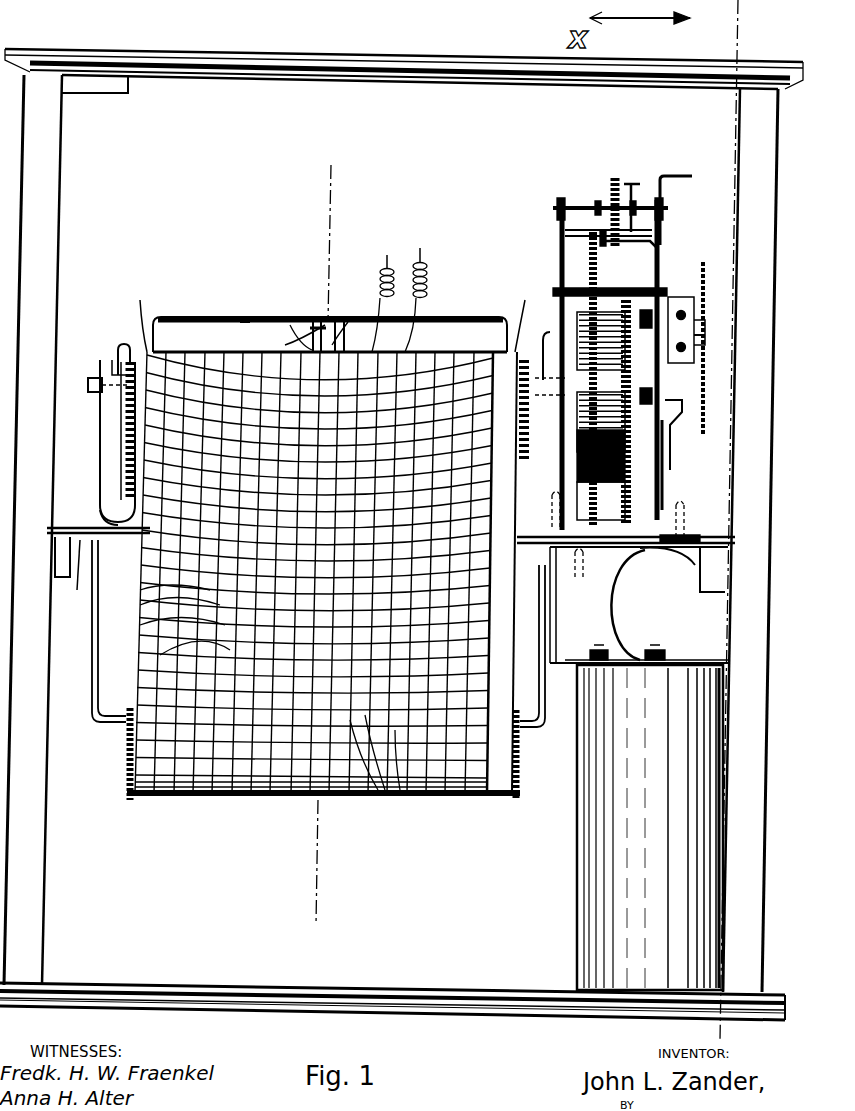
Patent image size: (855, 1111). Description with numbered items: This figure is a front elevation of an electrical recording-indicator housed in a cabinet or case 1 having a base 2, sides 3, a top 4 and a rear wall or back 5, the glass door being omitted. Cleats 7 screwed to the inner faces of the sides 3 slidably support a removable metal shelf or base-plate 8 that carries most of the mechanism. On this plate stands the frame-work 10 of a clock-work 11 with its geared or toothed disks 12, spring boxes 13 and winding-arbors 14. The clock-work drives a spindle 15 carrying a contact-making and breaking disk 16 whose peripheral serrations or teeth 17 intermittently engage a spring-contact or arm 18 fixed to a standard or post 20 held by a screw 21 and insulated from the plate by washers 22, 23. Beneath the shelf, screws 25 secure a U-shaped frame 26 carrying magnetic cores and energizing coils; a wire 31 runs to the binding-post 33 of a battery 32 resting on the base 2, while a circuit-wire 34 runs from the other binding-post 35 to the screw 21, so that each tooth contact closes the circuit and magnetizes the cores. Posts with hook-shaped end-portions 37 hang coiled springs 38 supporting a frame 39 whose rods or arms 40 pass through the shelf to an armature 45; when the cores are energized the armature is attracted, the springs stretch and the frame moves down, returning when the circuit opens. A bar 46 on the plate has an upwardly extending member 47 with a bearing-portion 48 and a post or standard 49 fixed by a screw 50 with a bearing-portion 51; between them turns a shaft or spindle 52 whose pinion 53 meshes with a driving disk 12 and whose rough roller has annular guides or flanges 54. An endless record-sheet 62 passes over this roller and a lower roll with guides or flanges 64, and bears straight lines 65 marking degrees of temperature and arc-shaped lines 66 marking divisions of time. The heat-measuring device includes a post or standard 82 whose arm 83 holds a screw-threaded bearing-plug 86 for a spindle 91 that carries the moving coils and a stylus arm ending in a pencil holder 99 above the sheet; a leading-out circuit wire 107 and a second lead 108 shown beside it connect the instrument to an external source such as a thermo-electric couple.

The cabinet or case 1 is at (392, 1023).
The base 2 is at (219, 985).
The sides 3 is at (48, 258).
The top 4 is at (422, 60).
The rear wall or back 5 is at (252, 95).
The cleats 7 is at (53, 570).
The shelf or base-plate 8 is at (122, 528).
The frame-work 10 is at (655, 262).
The clock-work 11 is at (603, 342).
The geared or toothed disks 12 is at (660, 275).
The boxes 13 is at (605, 300).
The winding-arbors 14 is at (684, 418).
The spindle 15 is at (708, 342).
The contact-making and breaking disk 16 is at (700, 290).
The serrations or teeth 17 is at (715, 334).
The spring-contact or arm 18 is at (705, 325).
The standard or post 20 is at (680, 470).
The screw 21 is at (704, 507).
The insulating washer 22 is at (686, 536).
The insulating washer 23 is at (674, 573).
The screws 25 is at (325, 581).
The U-shaped frame 26 is at (104, 724).
The wire 31 is at (566, 660).
The battery 32 is at (590, 878).
The binding-post 33 is at (602, 648).
The circuit-wire 34 is at (628, 607).
The binding-post 35 is at (104, 520).
The hook-shaped end-portion 37 is at (118, 352).
The coiled spring 38 is at (126, 452).
The ⌐⌐-shaped frame 39 is at (243, 320).
The rods or arms 40 is at (158, 333).
The armature 45 is at (588, 548).
The bar 46 is at (622, 512).
The upwardly extending member 47 is at (102, 412).
The bearing-portion 48 is at (116, 358).
The post or standard 49 is at (556, 500).
The screw 50 is at (520, 512).
The bearing-portion 51 is at (601, 342).
The shaft or spindle 52 is at (602, 405).
The pinion 53 is at (652, 395).
The annular guides or flanges 54 is at (332, 316).
The record-sheet 62 is at (226, 797).
The guides or flanges 64 is at (128, 800).
The straight lines 65 is at (138, 612).
The arc-shaped lines 66 is at (398, 800).
The post or standard 82 is at (350, 322).
The arm 83 is at (315, 322).
The screw-threaded bearing-plug 86 is at (380, 270).
The spindle 91 is at (300, 338).
The holder 99 is at (292, 322).
The leading-out circuit wire 107 is at (387, 255).
The coil 108 is at (420, 250).